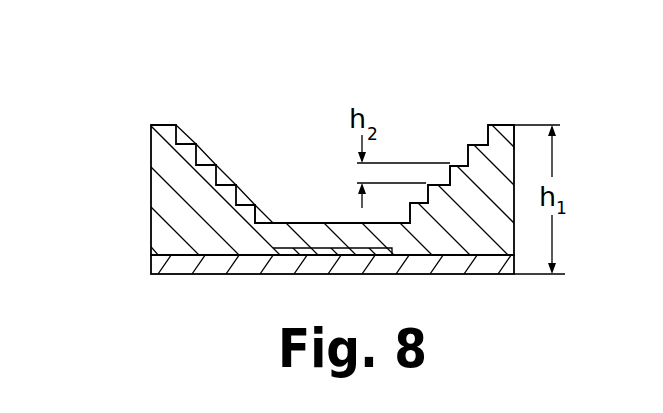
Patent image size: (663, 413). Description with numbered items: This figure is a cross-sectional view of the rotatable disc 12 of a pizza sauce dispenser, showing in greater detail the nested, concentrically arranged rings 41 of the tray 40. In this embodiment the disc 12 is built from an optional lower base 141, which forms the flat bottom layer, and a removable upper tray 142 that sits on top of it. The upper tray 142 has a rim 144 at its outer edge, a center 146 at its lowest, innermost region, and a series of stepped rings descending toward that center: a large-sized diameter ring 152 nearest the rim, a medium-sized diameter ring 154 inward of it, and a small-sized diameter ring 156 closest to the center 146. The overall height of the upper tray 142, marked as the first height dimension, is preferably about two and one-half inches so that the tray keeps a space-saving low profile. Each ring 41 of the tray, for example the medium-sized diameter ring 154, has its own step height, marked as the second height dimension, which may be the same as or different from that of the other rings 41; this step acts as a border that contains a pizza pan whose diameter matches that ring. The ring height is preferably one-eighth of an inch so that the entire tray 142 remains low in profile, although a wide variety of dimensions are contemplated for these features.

The rotatable disc 12 is at (142, 194).
The tray 40 is at (322, 124).
The nested concentric rings 41 is at (230, 184).
The lower base 141 is at (142, 267).
The removable upper tray 142 is at (507, 112).
The rim 144 is at (160, 125).
The center 146 is at (303, 222).
The large-sized diameter ring 152 is at (485, 126).
The medium-sized diameter ring 154 is at (465, 158).
The small-sized diameter ring 156 is at (446, 180).